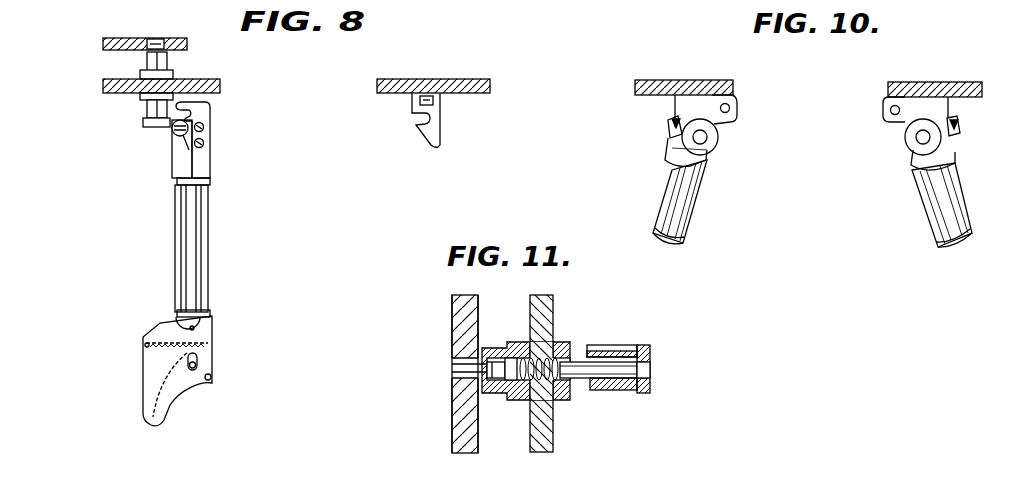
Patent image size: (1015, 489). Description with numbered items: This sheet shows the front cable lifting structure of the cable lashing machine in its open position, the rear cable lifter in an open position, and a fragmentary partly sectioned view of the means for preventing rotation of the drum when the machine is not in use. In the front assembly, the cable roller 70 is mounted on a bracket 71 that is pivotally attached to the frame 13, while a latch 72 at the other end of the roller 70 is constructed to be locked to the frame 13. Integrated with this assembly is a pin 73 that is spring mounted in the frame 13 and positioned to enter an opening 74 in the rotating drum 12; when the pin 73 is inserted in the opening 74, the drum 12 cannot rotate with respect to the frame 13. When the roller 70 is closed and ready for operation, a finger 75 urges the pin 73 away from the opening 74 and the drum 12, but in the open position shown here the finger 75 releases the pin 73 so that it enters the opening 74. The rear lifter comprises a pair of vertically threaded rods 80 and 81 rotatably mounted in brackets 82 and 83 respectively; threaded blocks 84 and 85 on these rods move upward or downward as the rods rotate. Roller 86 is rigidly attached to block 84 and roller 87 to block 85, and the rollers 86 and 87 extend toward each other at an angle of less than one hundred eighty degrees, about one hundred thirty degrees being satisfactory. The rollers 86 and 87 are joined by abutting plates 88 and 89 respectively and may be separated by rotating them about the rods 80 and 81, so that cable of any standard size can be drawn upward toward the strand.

In FIG. 8, the rotating drum 12 is at (103, 43).
In FIG. 11, the rotating drum 12 is at (460, 312).
In FIG. 8, the frame 13 is at (103, 83).
In FIG. 10, the frame 13 is at (637, 87).
In FIG. 11, the frame 13 is at (541, 373).
In FIG. 8, the cable roller 70 is at (193, 232).
In FIG. 8, the bracket 71 is at (183, 97).
In FIG. 8, the latch 72 is at (172, 392).
In FIG. 8, the pin 73 is at (153, 55).
In FIG. 11, the pin 73 is at (587, 378).
In FIG. 8, the opening 74 is at (150, 43).
In FIG. 11, the opening 74 is at (460, 367).
In FIG. 8, the finger 75 is at (190, 106).
In FIG. 11, the finger 75 is at (613, 350).
In FIG. 10, the vertically threaded rod 80 is at (707, 137).
In FIG. 10, the vertically threaded rod 81 is at (915, 138).
In FIG. 10, the bracket 82 is at (686, 102).
In FIG. 10, the bracket 83 is at (938, 107).
In FIG. 10, the threaded block 84 is at (705, 161).
In FIG. 10, the threaded block 85 is at (930, 163).
In FIG. 10, the roller 86 is at (690, 190).
In FIG. 10, the roller 87 is at (933, 200).
In FIG. 10, the abutting plate 88 is at (683, 237).
In FIG. 10, the abutting plate 89 is at (940, 241).